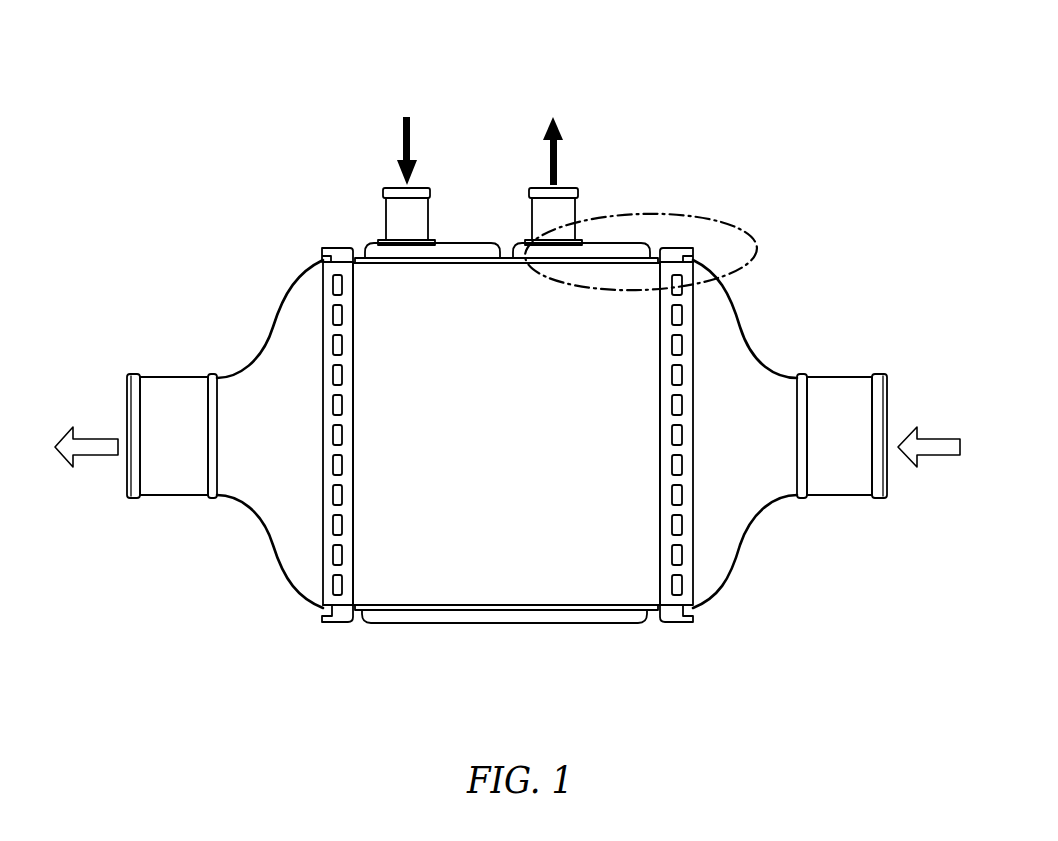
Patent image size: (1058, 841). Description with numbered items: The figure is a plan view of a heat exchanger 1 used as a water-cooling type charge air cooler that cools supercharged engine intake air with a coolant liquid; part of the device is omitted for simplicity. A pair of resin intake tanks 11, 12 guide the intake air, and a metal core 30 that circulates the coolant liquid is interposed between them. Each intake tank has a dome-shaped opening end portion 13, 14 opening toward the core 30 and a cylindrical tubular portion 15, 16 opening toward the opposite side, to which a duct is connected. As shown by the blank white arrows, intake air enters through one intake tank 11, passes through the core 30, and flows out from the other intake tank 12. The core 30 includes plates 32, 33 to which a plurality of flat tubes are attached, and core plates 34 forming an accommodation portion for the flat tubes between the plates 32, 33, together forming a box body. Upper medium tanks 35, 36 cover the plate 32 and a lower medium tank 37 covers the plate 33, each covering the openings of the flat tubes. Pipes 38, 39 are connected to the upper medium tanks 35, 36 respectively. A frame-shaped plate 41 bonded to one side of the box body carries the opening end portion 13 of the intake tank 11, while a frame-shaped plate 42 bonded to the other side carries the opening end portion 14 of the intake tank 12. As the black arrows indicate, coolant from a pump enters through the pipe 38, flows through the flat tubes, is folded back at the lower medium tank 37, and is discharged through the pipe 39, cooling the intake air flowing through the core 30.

The heat exchanger 1 is at (653, 98).
The intake tank 11 is at (736, 353).
The intake tank 12 is at (282, 342).
The opening end portion 13 is at (680, 528).
The opening end portion 14 is at (337, 533).
The tubular portion 15 is at (847, 385).
The tubular portion 16 is at (160, 383).
The core 30 is at (580, 640).
The plate 32 is at (486, 258).
The plate 33 is at (533, 615).
The core plate 34 is at (617, 590).
The upper medium tank 35 is at (625, 252).
The upper medium tank 36 is at (463, 250).
The lower medium tank 37 is at (433, 617).
The pipe 38 is at (568, 213).
The pipe 39 is at (390, 218).
The frame-shaped plate 41 is at (685, 335).
The frame-shaped plate 42 is at (332, 264).